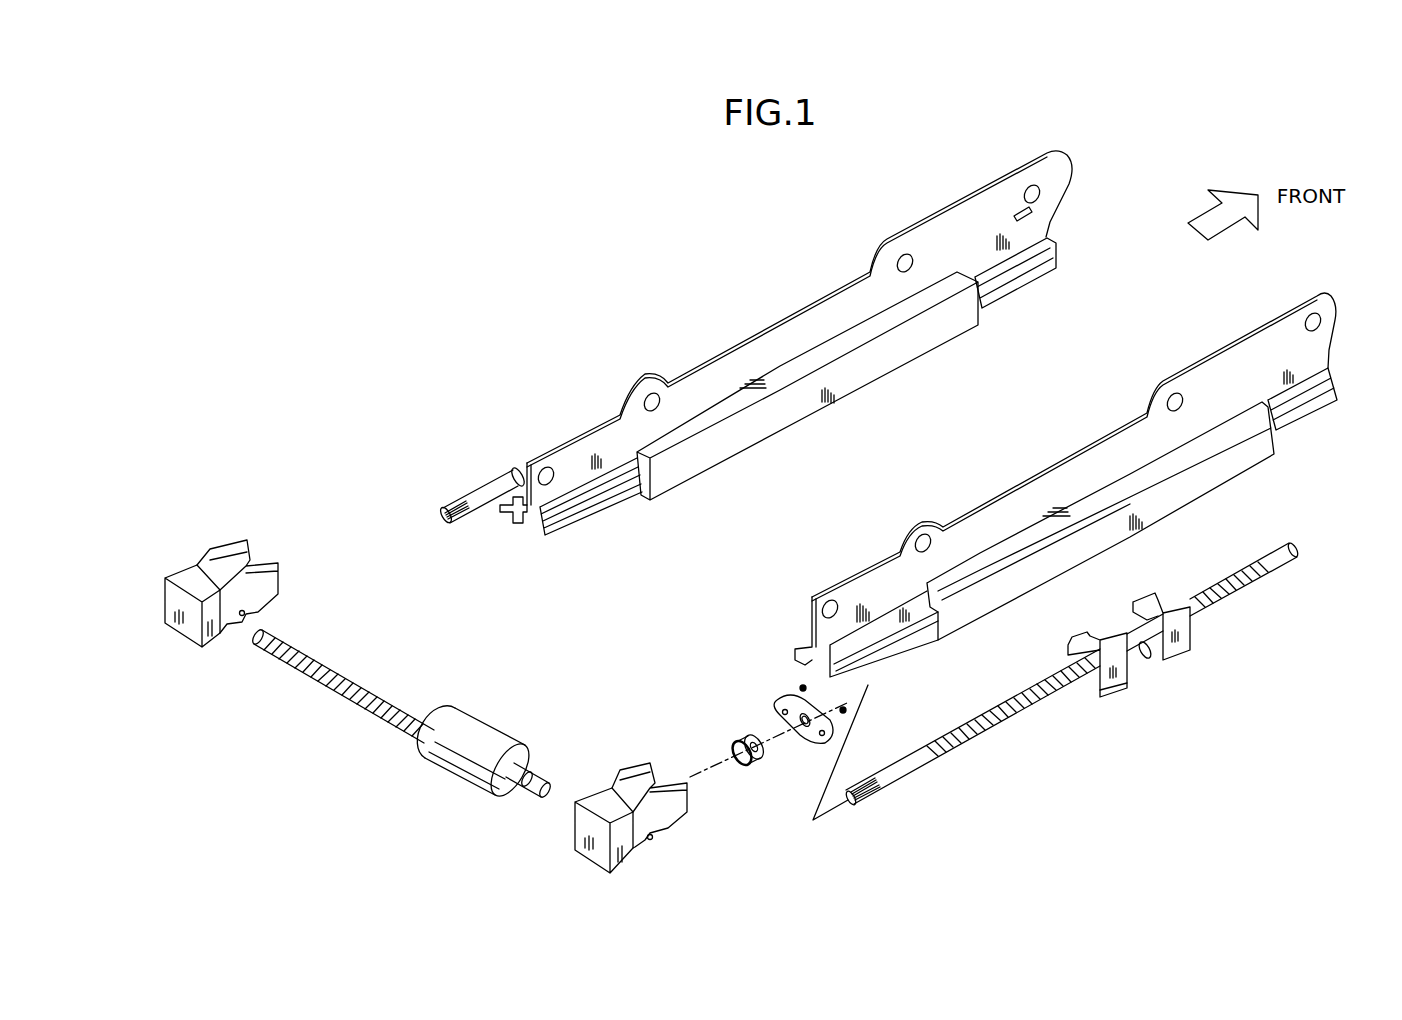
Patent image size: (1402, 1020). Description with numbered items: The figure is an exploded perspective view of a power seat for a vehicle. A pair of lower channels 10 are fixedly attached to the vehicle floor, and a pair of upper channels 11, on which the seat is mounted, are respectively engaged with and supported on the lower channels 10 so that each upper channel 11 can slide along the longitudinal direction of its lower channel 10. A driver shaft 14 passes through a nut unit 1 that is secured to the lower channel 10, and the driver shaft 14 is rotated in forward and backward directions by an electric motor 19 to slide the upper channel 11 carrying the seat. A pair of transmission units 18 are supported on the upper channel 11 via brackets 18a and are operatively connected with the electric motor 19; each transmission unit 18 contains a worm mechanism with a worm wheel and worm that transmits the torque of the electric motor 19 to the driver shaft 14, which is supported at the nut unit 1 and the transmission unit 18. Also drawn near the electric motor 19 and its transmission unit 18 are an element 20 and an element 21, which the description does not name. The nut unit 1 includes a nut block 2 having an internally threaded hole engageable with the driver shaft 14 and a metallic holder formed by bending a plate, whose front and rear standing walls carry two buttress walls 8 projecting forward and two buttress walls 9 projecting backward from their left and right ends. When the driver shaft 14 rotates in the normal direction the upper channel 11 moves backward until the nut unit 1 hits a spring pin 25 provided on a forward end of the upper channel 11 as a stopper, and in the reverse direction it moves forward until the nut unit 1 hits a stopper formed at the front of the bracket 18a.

The nut unit 1 is at (1138, 653).
The nut block 2 is at (1112, 621).
The buttress walls 8 is at (1177, 657).
The buttress walls 9 is at (1117, 697).
The lower channel 10 is at (897, 357).
The upper channel 11 is at (1058, 268).
The driver shaft 14 is at (488, 495).
The transmission unit 18 is at (183, 577).
The bracket 18a is at (273, 567).
The electric motor 19 is at (440, 767).
The motor shaft 20 is at (530, 797).
The gear 21 is at (742, 767).
The spring pin 25 is at (1018, 208).